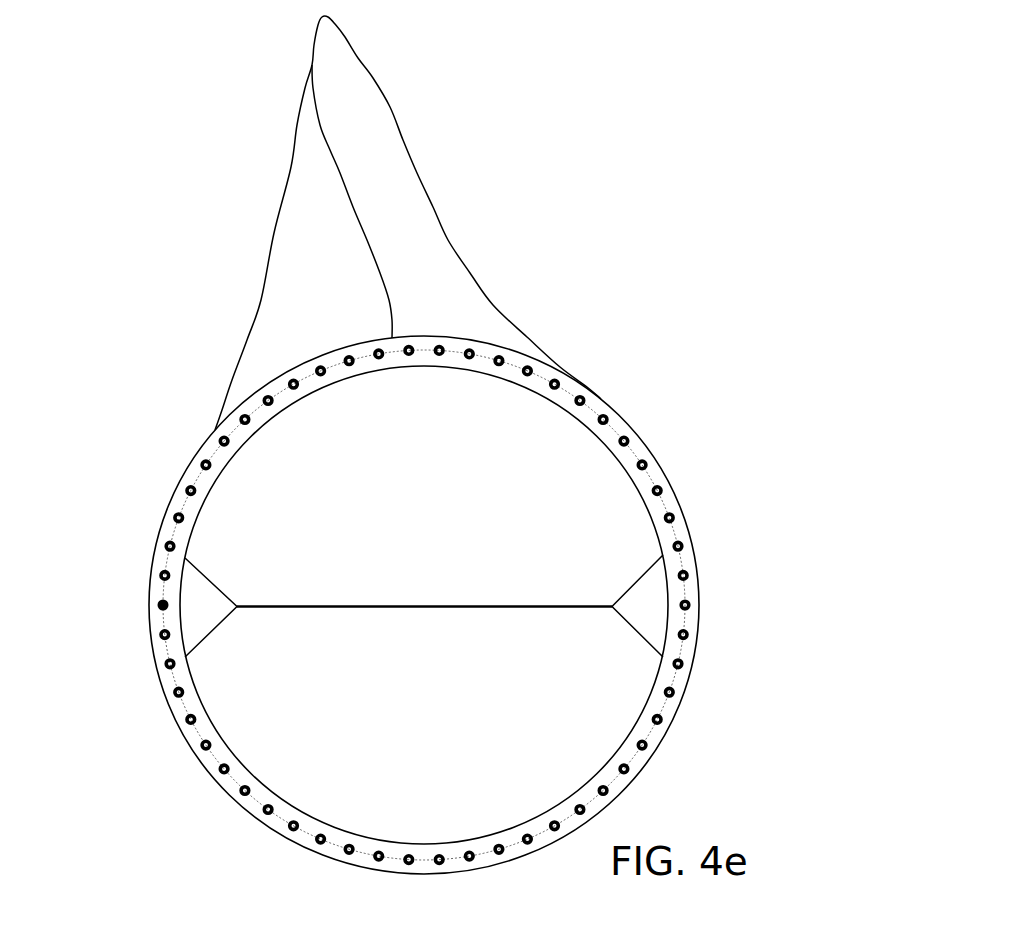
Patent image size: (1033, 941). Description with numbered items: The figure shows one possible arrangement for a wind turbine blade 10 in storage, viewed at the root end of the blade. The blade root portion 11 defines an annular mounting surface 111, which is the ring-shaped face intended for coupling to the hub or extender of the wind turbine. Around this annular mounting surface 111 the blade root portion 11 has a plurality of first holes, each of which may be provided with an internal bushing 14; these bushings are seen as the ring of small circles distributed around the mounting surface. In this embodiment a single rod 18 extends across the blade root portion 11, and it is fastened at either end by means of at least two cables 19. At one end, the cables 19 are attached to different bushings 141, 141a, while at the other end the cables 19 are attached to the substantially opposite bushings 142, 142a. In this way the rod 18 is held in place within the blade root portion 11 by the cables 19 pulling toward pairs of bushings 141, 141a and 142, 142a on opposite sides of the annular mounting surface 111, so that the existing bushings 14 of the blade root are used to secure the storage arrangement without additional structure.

The blade 10 is at (640, 350).
The blade root portion 11 is at (673, 478).
The annular mounting surface 111 is at (205, 757).
The internal bushing 14 is at (698, 628).
The bushing 141 is at (698, 598).
The bushing 141a is at (697, 545).
The opposite bushing 142 is at (157, 605).
The opposite bushing 142a is at (160, 548).
The rod 18 is at (403, 607).
The cables 19 is at (638, 572).